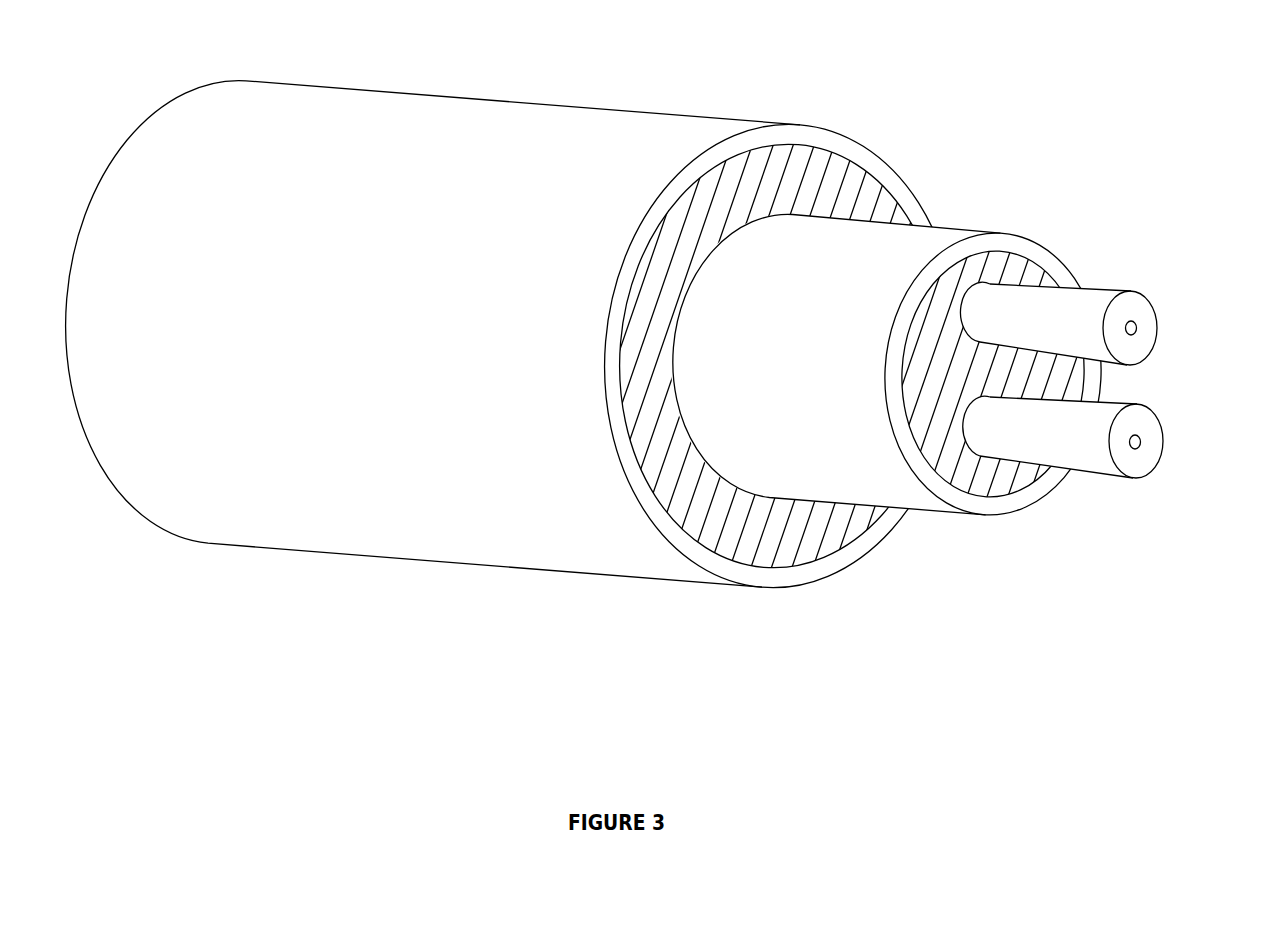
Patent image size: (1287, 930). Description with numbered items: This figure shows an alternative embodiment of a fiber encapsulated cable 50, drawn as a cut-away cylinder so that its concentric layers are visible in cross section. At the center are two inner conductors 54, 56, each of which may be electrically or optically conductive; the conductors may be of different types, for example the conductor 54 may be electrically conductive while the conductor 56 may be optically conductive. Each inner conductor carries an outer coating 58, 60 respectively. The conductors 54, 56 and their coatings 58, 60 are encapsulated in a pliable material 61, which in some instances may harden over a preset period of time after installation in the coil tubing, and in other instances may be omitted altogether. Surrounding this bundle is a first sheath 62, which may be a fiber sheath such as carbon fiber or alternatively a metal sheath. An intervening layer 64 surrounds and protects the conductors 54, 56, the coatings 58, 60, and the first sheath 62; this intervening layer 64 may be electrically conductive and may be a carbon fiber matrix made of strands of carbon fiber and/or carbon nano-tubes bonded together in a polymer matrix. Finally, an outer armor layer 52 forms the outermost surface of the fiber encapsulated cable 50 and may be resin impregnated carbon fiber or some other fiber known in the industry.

The fiber encapsulated cable 50 is at (499, 597).
The outer armor layer 52 is at (807, 138).
The inner conductor 54 is at (1141, 447).
The inner conductor 56 is at (1136, 325).
The outer coating 58 is at (1132, 455).
The outer coating 60 is at (1125, 343).
The pliable material 61 is at (998, 258).
The first sheath 62 is at (967, 503).
The intervening layer 64 is at (718, 510).